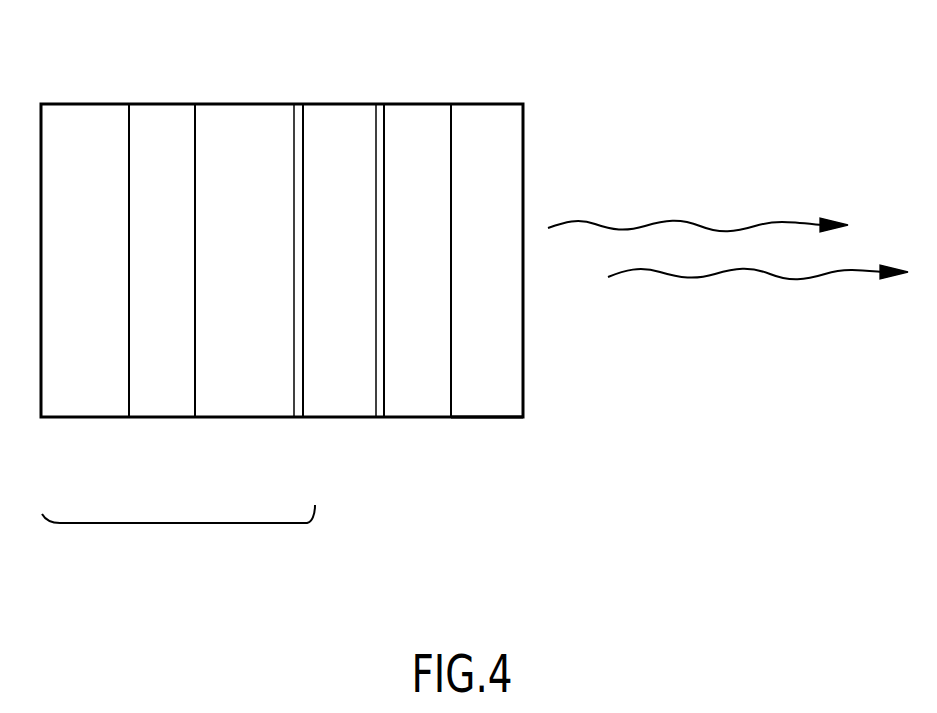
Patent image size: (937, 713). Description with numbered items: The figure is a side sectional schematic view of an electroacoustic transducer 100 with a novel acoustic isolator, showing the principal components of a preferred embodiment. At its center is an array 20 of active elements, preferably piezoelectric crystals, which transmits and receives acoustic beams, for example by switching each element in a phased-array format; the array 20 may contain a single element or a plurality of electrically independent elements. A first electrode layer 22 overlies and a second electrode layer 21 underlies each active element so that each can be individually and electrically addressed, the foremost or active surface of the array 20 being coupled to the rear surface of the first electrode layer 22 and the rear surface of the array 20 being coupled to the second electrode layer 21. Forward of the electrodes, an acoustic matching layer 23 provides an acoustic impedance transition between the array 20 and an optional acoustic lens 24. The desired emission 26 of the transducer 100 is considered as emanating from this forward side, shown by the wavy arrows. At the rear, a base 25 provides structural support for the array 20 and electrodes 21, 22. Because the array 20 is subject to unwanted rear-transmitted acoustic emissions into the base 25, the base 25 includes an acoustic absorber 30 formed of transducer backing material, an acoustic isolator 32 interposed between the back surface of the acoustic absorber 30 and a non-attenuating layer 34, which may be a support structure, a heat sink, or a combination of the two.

The electroacoustic transducer 100 is at (382, 509).
The array of active elements 20 is at (346, 133).
The second electrode layer 21 is at (296, 104).
The first electrode layer 22 is at (386, 142).
The acoustic matching layer 23 is at (415, 405).
The acoustic lens 24 is at (483, 405).
The base 25 is at (175, 523).
The desired emission 26 is at (713, 272).
The acoustic absorber 30 is at (243, 405).
The acoustic isolator 32 is at (165, 405).
The non-attenuating layer 34 is at (70, 405).